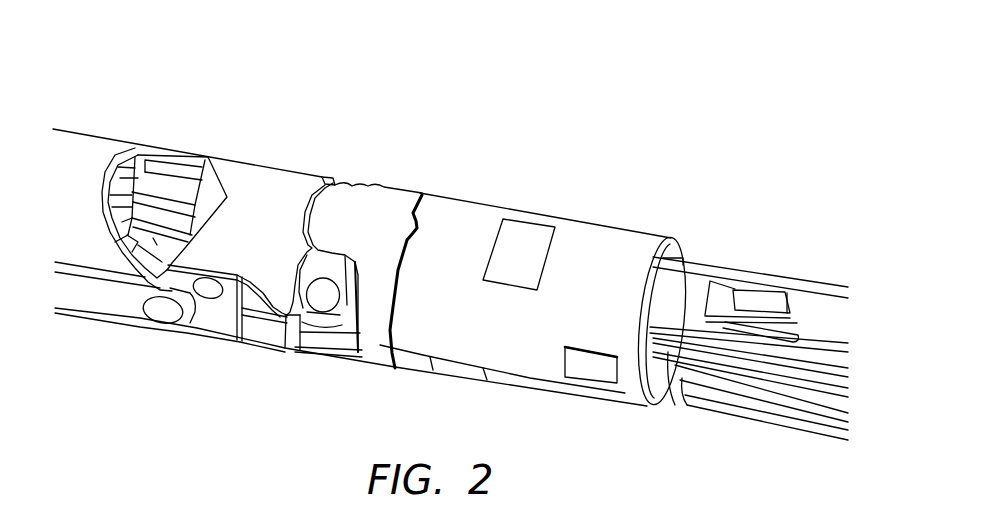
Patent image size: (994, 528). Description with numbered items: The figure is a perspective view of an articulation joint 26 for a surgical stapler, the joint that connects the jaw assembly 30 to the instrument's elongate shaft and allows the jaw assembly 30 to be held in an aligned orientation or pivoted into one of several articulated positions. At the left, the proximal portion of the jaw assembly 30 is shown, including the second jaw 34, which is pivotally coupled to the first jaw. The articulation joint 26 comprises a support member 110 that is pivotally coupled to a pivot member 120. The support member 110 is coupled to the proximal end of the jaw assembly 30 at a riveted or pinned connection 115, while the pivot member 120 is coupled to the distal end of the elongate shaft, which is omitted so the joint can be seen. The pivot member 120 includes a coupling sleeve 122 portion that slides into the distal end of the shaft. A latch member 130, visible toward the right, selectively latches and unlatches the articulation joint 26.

The articulation joint 26 is at (520, 170).
The jaw assembly 30 is at (140, 130).
The second jaw 34 is at (82, 155).
The support member 110 is at (255, 170).
The riveted or pinned connection 115 is at (212, 292).
The pivot member 120 is at (397, 215).
The coupling sleeve 122 is at (568, 313).
The latch member 130 is at (728, 300).